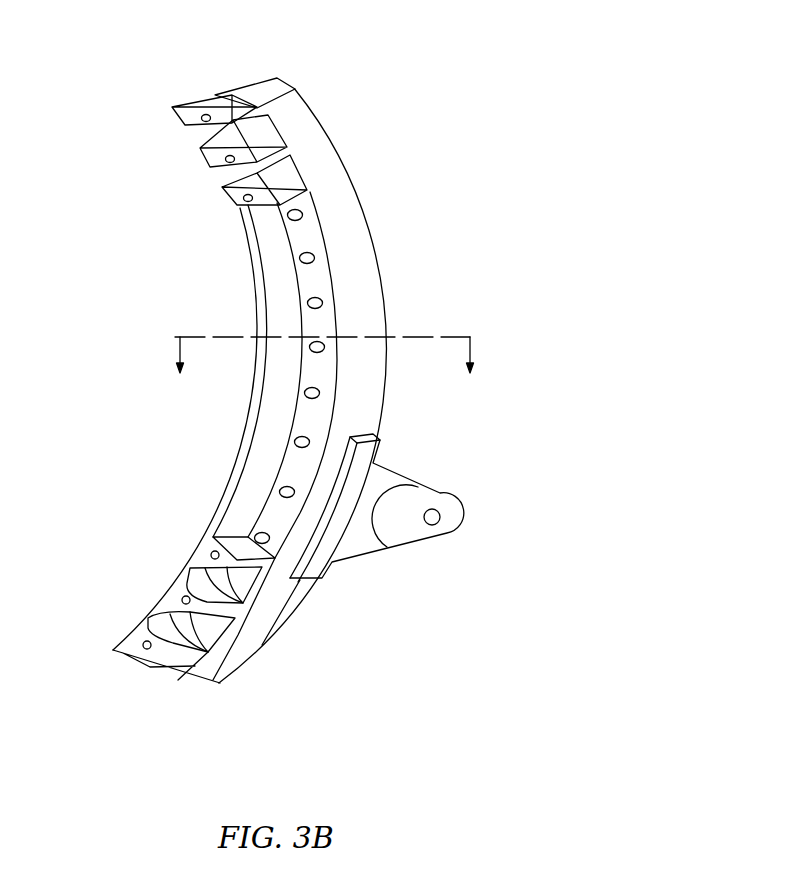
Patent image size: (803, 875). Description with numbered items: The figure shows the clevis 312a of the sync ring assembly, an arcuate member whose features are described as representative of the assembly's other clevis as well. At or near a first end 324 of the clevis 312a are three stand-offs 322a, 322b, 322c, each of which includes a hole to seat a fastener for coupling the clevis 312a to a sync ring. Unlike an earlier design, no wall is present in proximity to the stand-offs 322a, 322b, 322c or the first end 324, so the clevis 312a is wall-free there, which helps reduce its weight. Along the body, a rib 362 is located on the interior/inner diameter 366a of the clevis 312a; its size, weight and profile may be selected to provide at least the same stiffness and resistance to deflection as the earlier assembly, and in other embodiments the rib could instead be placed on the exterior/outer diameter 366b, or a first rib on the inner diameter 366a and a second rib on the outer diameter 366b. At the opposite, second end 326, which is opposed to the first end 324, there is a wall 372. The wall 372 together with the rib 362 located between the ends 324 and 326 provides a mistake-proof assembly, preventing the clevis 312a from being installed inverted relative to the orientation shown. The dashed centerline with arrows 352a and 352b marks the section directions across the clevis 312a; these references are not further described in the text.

The clevis 312a is at (289, 379).
The first end 324 is at (258, 84).
The stand-off 322a is at (186, 118).
The stand-off 322b is at (211, 162).
The stand-off 322c is at (234, 198).
The interior/inner diameter 366a is at (334, 268).
The exterior/outer diameter 366b is at (386, 292).
The first section direction 352a is at (178, 370).
The second section direction 352b is at (468, 370).
The rib 362 is at (277, 421).
The wall 372 is at (172, 598).
The second end 326 is at (219, 664).